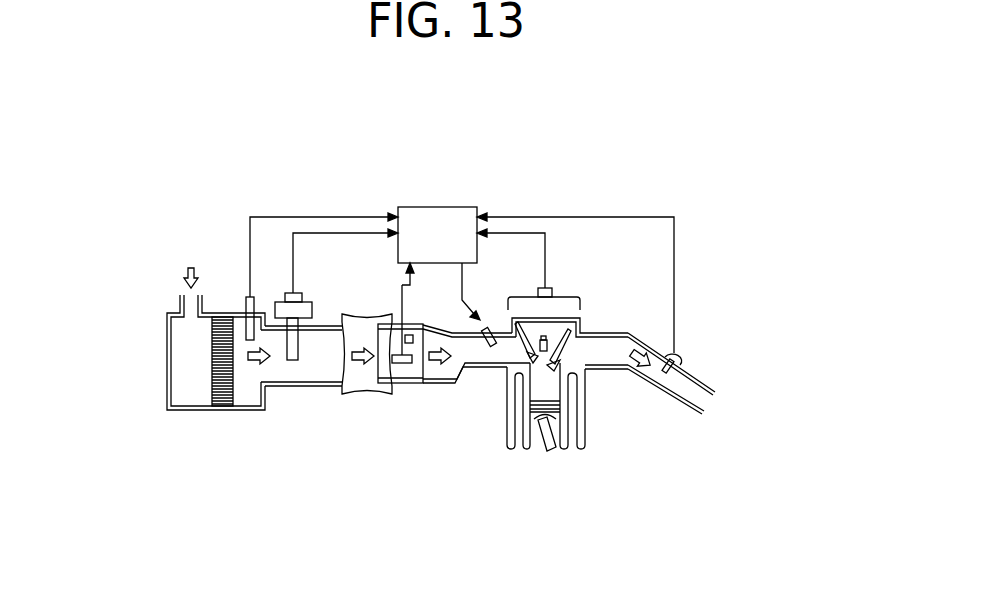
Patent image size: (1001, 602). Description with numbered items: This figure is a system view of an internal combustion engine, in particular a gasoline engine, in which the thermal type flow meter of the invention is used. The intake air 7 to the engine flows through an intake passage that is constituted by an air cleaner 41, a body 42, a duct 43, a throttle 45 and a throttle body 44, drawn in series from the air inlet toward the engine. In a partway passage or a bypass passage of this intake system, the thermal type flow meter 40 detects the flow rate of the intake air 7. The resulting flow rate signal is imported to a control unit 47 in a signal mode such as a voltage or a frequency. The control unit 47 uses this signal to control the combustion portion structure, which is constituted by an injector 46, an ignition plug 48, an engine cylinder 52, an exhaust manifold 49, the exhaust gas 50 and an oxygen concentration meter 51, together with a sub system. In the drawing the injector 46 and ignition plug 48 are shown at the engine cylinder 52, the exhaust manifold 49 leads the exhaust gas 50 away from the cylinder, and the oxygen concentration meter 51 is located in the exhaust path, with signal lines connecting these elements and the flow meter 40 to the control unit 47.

The intake air 7 is at (183, 292).
The thermal type flow meter 40 is at (313, 303).
The air cleaner 41 is at (167, 388).
The body 42 is at (280, 388).
The duct 43 is at (355, 392).
The throttle body 44 is at (387, 383).
The throttle 45 is at (473, 368).
The injector 46 is at (486, 318).
The control unit 47 is at (428, 207).
The ignition plug 48 is at (553, 297).
The exhaust manifold 49 is at (593, 348).
The exhaust gas 50 is at (640, 352).
The oxygen concentration meter 51 is at (677, 365).
The engine cylinder 52 is at (537, 440).